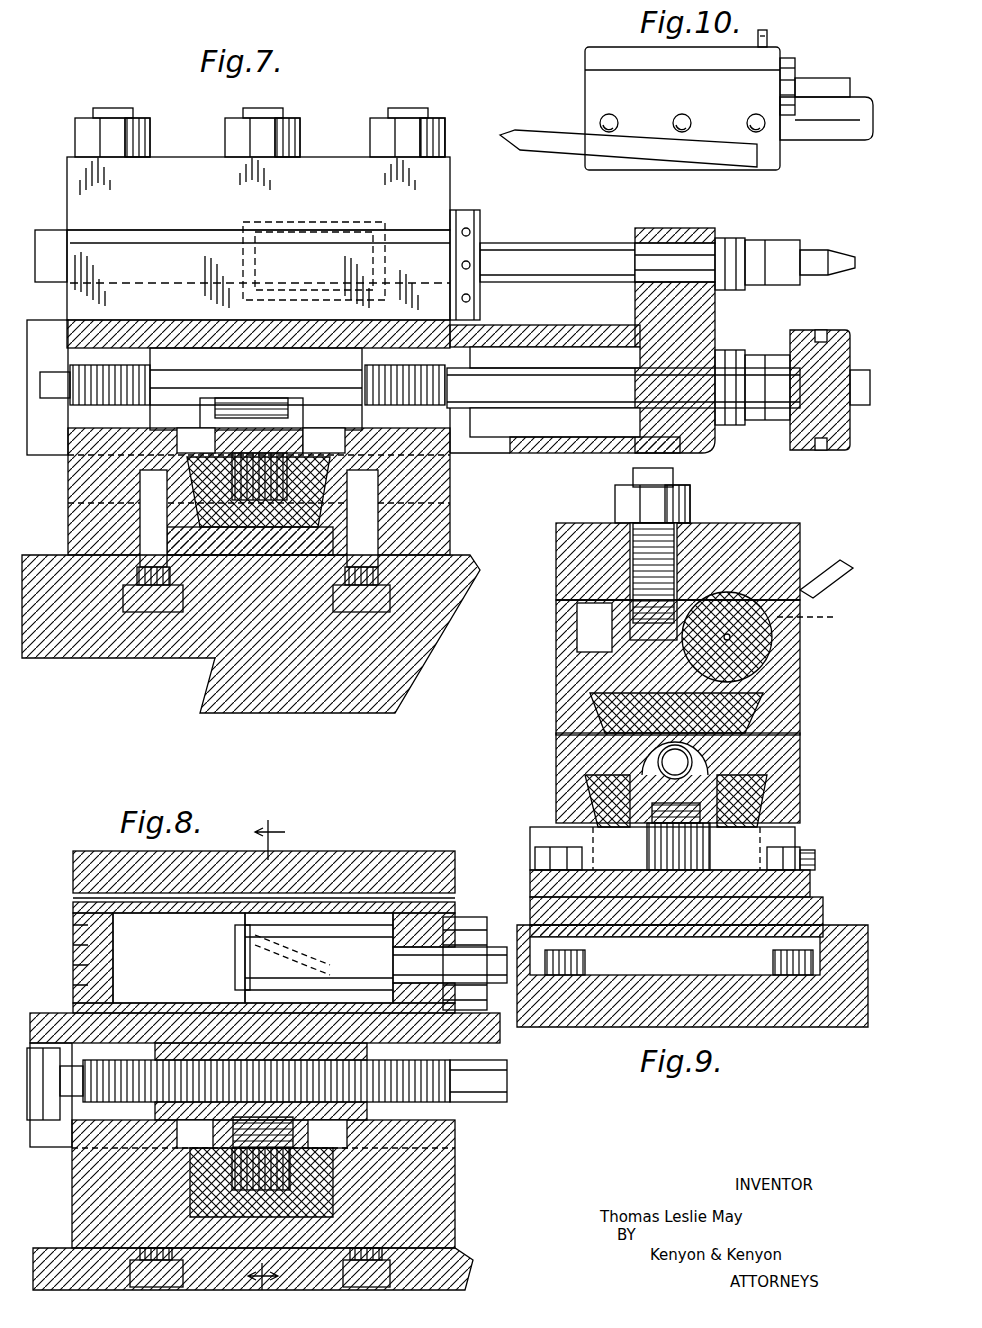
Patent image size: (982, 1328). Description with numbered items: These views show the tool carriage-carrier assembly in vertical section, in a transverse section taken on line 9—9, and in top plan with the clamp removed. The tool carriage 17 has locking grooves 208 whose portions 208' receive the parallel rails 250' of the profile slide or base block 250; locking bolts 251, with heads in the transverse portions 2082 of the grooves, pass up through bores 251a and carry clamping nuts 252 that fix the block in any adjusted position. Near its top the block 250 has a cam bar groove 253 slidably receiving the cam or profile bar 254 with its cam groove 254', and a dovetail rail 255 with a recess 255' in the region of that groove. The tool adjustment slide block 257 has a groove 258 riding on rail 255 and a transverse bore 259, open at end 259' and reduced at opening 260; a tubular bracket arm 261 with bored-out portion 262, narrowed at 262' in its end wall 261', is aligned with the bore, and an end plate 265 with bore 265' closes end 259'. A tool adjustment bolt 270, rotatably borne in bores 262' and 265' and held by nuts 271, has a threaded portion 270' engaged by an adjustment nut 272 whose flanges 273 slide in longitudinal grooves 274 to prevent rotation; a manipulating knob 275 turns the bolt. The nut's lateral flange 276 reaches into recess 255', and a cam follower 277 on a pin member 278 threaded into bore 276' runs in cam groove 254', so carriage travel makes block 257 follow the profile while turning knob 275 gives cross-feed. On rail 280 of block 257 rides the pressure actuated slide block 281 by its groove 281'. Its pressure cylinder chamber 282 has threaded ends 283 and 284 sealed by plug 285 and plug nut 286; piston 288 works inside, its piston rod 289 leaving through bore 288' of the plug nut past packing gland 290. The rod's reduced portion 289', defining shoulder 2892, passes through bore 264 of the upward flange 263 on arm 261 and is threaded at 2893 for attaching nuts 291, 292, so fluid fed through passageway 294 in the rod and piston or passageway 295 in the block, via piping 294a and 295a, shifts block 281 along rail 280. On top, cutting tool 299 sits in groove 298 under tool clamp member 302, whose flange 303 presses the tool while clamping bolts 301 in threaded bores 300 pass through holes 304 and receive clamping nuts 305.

In FIG. 7, the tool carriage 17 is at (405, 678).
In FIG. 9, the tool carriage 17 is at (836, 1020).
In FIG. 8, the tool carriage 17 is at (465, 1276).
In FIG. 7, the locking grooves 208 is at (257, 638).
In FIG. 8, the locking grooves 208 is at (82, 1240).
In FIG. 7, the portions of the locking grooves 208' is at (204, 576).
In FIG. 9, the portions of the locking grooves 208' is at (839, 962).
In FIG. 7, the transverse portions of the grooves 2082 is at (393, 622).
In FIG. 9, the transverse portions of the grooves 2082 is at (660, 978).
In FIG. 8, the transverse portions of the grooves 2082 is at (400, 1247).
In FIG. 7, the profile slide or base block 250 is at (469, 484).
In FIG. 9, the profile slide or base block 250 is at (700, 903).
In FIG. 8, the profile slide or base block 250 is at (288, 1184).
In FIG. 7, the rails 250' is at (234, 587).
In FIG. 9, the rails 250' is at (849, 934).
In FIG. 8, the rails 250' is at (211, 1245).
In FIG. 7, the locking bolts 251 is at (140, 531).
In FIG. 9, the locking bolts 251 is at (815, 872).
In FIG. 9, the bores 251a is at (583, 928).
In FIG. 9, the clamping nuts 252 is at (800, 855).
In FIG. 7, the cam or profile bar groove 253 is at (165, 492).
In FIG. 8, the cam or profile bar groove 253 is at (230, 1168).
In FIG. 7, the cam or profile bar 254 is at (250, 541).
In FIG. 9, the cam or profile bar 254 is at (641, 852).
In FIG. 8, the cam or profile bar 254 is at (295, 1202).
In FIG. 9, the cam or profile groove 254' is at (511, 817).
In FIG. 8, the cam or profile groove 254' is at (170, 1197).
In FIG. 7, the rail 255 is at (237, 491).
In FIG. 9, the rail 255 is at (804, 791).
In FIG. 7, the cutout portion or recess 255' is at (140, 441).
In FIG. 7, the tool adjustment slide block 257 is at (430, 340).
In FIG. 9, the tool adjustment slide block 257 is at (800, 762).
In FIG. 8, the tool adjustment slide block 257 is at (490, 1062).
In FIG. 9, the groove 258 is at (768, 812).
In FIG. 7, the transverse bore 259 is at (258, 320).
In FIG. 8, the transverse bore 259 is at (86, 1021).
In FIG. 7, the open end 259' is at (52, 359).
In FIG. 7, the reduced opening 260 is at (455, 346).
In FIG. 8, the reduced opening 260 is at (470, 1052).
In FIG. 7, the tubular bracket arm or sleeve 261 is at (565, 430).
In FIG. 7, the end wall 261' is at (699, 367).
In FIG. 7, the bored-out portion 262 is at (555, 335).
In FIG. 7, the reduced section 262' is at (733, 375).
In FIG. 7, the upwardly extending flange 263 is at (683, 252).
In FIG. 7, the horizontal bore 264 is at (722, 260).
In FIG. 7, the end plate 265 is at (45, 372).
In FIG. 8, the end plate 265 is at (41, 987).
In FIG. 8, the bore 265' is at (48, 1108).
In FIG. 7, the tool adjustment bolt 270 is at (623, 388).
In FIG. 8, the tool adjustment bolt 270 is at (453, 936).
In FIG. 7, the threaded portion 270' is at (242, 394).
In FIG. 8, the threaded portion 270' is at (295, 1089).
In FIG. 7, the nuts 271 is at (748, 368).
In FIG. 8, the nuts 271 is at (35, 1122).
In FIG. 7, the adjustment nut 272 is at (256, 389).
In FIG. 9, the adjustment nut 272 is at (635, 740).
In FIG. 8, the adjustment nut 272 is at (265, 1066).
In FIG. 7, the flanges 273 is at (258, 392).
In FIG. 9, the flanges 273 is at (705, 757).
In FIG. 9, the longitudinal grooves 274 is at (625, 752).
In FIG. 7, the manipulating knob 275 is at (832, 335).
In FIG. 7, the lateral flange 276 is at (251, 425).
In FIG. 8, the lateral flange 276 is at (160, 1153).
In FIG. 8, the bore 276' is at (313, 1132).
In FIG. 7, the cam follower 277 is at (259, 476).
In FIG. 9, the cam follower 277 is at (647, 850).
In FIG. 8, the pin member 278 is at (261, 1182).
In FIG. 9, the rail 280 is at (700, 700).
In FIG. 10, the cross feed pressure actuated slide block 281 is at (707, 103).
In FIG. 9, the cross feed pressure actuated slide block 281 is at (703, 641).
In FIG. 8, the cross feed pressure actuated slide block 281 is at (264, 918).
In FIG. 9, the groove 281' is at (823, 739).
In FIG. 9, the pressure cylinder chamber 282 is at (765, 660).
In FIG. 8, the pressure cylinder chamber 282 is at (175, 925).
In FIG. 8, the threaded portion 283 is at (85, 905).
In FIG. 8, the threaded portion 284 is at (410, 900).
In FIG. 8, the removable threaded plug 285 is at (75, 943).
In FIG. 8, the removable plug nut 286 is at (447, 912).
In FIG. 9, the piston 288 is at (810, 697).
In FIG. 8, the piston 288 is at (314, 958).
In FIG. 8, the spindle bore 288' is at (365, 885).
In FIG. 7, the piston rod 289 is at (557, 251).
In FIG. 10, the piston rod 289 is at (826, 109).
In FIG. 8, the piston rod 289 is at (429, 994).
In FIG. 7, the portion of reduced diameter 289' is at (675, 220).
In FIG. 7, the shoulder 2892 is at (600, 237).
In FIG. 7, the threaded portion 2893 is at (790, 286).
In FIG. 7, the packing gland arrangement 290 is at (462, 214).
In FIG. 10, the packing gland arrangement 290 is at (797, 79).
In FIG. 8, the packing gland arrangement 290 is at (445, 947).
In FIG. 7, the attaching and clamping nut 291 is at (768, 240).
In FIG. 7, the attaching and clamping nut 292 is at (752, 250).
In FIG. 9, the fluid inlet passageway 294 is at (735, 640).
In FIG. 8, the fluid inlet passageway 294 is at (318, 958).
In FIG. 7, the piping 294a is at (838, 260).
In FIG. 9, the passageway 295 is at (822, 617).
In FIG. 10, the piping 295a is at (768, 33).
In FIG. 9, the piping 295a is at (822, 595).
In FIG. 10, the tool supporting groove 298 is at (660, 158).
In FIG. 9, the tool supporting groove 298 is at (578, 650).
In FIG. 10, the cutting tool 299 is at (545, 138).
In FIG. 9, the cutting tool 299 is at (588, 620).
In FIG. 9, the threaded bores 300 is at (690, 575).
In FIG. 7, the clamping bolts 301 is at (127, 118).
In FIG. 10, the clamping bolts 301 is at (609, 118).
In FIG. 9, the clamping bolts 301 is at (675, 477).
In FIG. 7, the tool clamp member 302 is at (318, 165).
In FIG. 9, the tool clamp member 302 is at (800, 533).
In FIG. 9, the downwardly extending flange 303 is at (578, 578).
In FIG. 9, the holes 304 is at (620, 535).
In FIG. 9, the clamping nuts 305 is at (690, 505).
In FIG. 8, the section line 9— 9 is at (267, 1053).